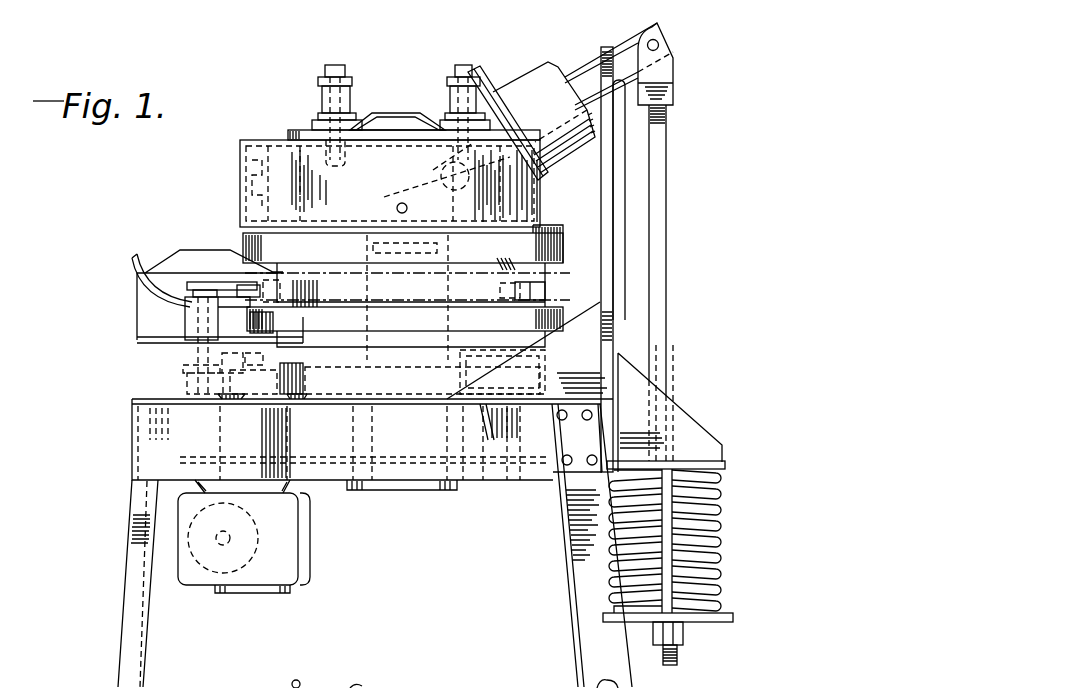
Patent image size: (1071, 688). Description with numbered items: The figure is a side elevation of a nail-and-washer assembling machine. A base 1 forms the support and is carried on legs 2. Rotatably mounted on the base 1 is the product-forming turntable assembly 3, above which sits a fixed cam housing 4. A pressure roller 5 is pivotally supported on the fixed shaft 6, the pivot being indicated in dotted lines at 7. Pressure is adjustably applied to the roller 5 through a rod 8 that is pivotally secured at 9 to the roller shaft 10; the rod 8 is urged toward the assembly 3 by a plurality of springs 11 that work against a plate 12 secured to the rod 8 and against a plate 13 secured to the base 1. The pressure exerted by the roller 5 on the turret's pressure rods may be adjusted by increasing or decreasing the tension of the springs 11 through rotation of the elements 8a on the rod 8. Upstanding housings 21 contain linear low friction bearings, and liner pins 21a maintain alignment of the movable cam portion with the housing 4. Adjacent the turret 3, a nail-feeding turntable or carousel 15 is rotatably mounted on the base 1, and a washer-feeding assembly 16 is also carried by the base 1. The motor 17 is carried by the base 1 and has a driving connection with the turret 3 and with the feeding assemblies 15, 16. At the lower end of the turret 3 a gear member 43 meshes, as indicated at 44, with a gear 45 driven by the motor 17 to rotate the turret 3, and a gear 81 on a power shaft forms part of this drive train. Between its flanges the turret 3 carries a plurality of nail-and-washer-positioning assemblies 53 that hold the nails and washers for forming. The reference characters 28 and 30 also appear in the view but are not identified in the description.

The base 1 is at (126, 410).
The legs 2 is at (128, 581).
The product-forming turntable assembly 3 is at (568, 238).
The fixed cam housing 4 is at (240, 168).
The pressure roller 5 is at (523, 78).
The fixed shaft 6 is at (398, 112).
The pivot of pressure roller 7 is at (398, 205).
The rod 8 is at (668, 195).
The adjusting elements 8a is at (683, 636).
The pivot of rod 9 is at (663, 40).
The roller shaft 10 is at (588, 68).
The springs 11 is at (722, 522).
The plate 12 is at (716, 622).
The plate 13 is at (723, 462).
The nail-feeding turntable 15 is at (175, 255).
The washer-feeding assembly 16 is at (228, 277).
The motor 17 is at (318, 537).
The upstanding housings 21 is at (320, 96).
The liner pins 21a is at (335, 64).
The curved guide 28 is at (138, 272).
The member 30 is at (350, 687).
The gear member 43 is at (553, 377).
The gear mesh 44 is at (287, 400).
The gear 45 is at (228, 395).
The nail-and-washer-positioning assemblies 53 is at (547, 293).
The gear 81 is at (313, 352).